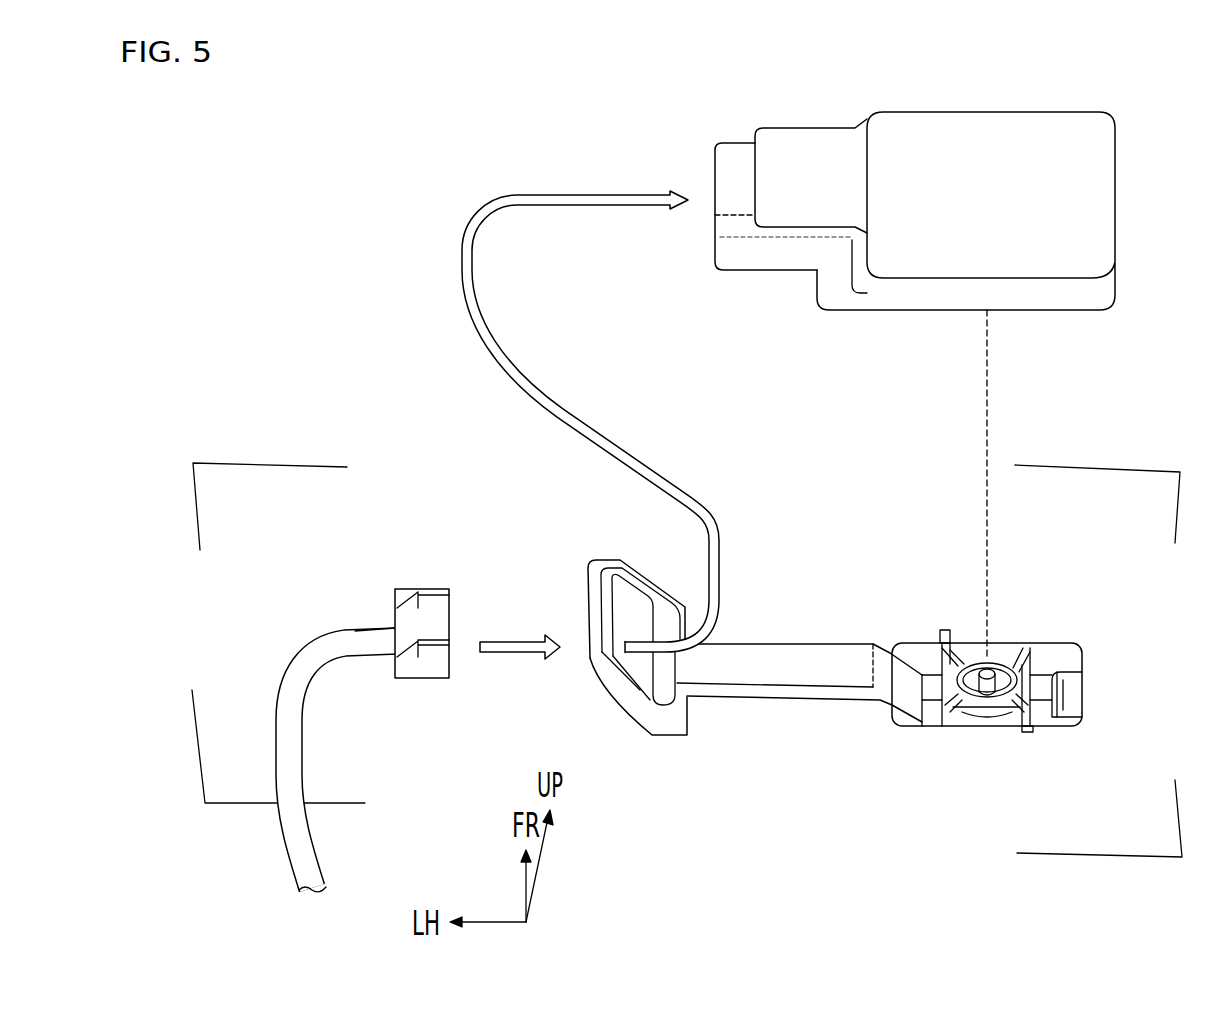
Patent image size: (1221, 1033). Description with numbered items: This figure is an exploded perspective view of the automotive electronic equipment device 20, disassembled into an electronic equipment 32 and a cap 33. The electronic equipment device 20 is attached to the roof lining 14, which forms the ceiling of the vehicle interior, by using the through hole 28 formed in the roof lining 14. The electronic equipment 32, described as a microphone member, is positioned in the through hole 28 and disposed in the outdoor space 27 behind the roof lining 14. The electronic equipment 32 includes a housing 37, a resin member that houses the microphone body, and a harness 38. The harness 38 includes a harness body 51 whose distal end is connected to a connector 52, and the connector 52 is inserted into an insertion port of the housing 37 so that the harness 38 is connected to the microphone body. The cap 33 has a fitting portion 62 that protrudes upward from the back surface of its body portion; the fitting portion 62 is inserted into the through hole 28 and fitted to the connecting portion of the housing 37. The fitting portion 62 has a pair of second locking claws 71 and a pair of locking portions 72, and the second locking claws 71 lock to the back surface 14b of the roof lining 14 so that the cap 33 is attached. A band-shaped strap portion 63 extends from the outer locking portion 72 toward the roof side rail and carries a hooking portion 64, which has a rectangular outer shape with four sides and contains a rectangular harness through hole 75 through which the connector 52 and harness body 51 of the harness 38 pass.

The roof lining 14 is at (825, 783).
The back surface of the roof lining 14b is at (960, 781).
The electronic equipment device 20 is at (915, 353).
The outdoor space 27 is at (895, 440).
The through hole 28 is at (1023, 655).
The electronic equipment 32 is at (930, 108).
The cap 33 is at (798, 634).
The housing 37 is at (830, 150).
The harness 38 is at (347, 618).
The harness body 51 is at (290, 832).
The connector 52 is at (428, 588).
The fitting portion 62 is at (1092, 687).
The strap portion 63 is at (822, 658).
The hooking portion 64 is at (516, 606).
The second locking claws 71 is at (946, 630).
The locking portions 72 is at (932, 690).
The harness through hole 75 is at (652, 703).